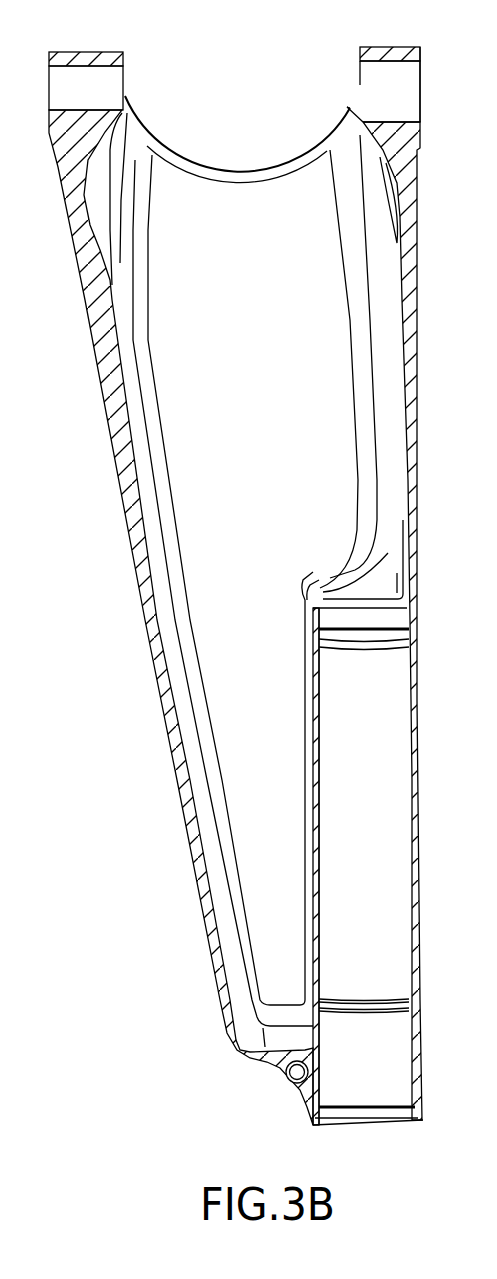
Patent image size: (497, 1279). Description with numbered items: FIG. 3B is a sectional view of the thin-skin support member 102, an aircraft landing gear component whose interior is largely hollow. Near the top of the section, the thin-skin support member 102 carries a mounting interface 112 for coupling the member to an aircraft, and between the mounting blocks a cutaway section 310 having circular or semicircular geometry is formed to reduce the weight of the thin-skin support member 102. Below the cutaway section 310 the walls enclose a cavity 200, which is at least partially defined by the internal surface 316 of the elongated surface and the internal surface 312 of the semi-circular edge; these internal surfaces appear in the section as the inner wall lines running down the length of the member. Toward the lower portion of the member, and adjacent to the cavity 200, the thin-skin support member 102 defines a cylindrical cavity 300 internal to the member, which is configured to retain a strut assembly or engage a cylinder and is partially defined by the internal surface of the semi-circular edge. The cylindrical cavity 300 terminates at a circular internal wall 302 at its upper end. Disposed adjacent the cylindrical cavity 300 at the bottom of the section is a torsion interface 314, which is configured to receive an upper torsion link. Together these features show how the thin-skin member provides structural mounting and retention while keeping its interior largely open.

The thin-skin support member 102 is at (233, 570).
The mounting interface 112 is at (385, 85).
The cavity 200 is at (193, 308).
The cylindrical cavity 300 is at (330, 813).
The circular internal wall 302 is at (370, 607).
The cutaway section 310 is at (305, 153).
The internal surface of semi-circular edge 312 is at (157, 476).
The torsion interface 314 is at (257, 1062).
The internal surface of elongated surface 316 is at (248, 380).